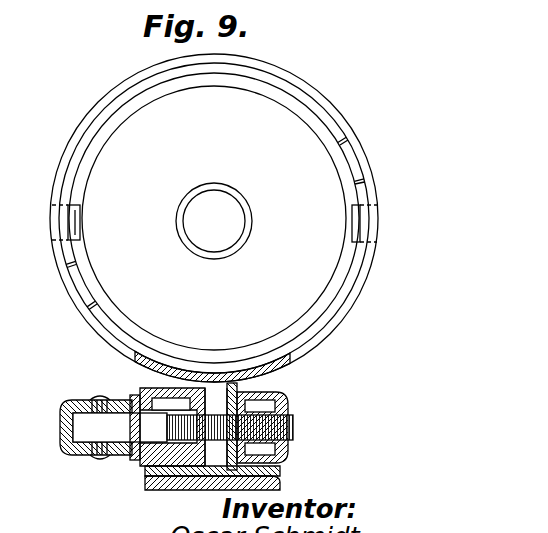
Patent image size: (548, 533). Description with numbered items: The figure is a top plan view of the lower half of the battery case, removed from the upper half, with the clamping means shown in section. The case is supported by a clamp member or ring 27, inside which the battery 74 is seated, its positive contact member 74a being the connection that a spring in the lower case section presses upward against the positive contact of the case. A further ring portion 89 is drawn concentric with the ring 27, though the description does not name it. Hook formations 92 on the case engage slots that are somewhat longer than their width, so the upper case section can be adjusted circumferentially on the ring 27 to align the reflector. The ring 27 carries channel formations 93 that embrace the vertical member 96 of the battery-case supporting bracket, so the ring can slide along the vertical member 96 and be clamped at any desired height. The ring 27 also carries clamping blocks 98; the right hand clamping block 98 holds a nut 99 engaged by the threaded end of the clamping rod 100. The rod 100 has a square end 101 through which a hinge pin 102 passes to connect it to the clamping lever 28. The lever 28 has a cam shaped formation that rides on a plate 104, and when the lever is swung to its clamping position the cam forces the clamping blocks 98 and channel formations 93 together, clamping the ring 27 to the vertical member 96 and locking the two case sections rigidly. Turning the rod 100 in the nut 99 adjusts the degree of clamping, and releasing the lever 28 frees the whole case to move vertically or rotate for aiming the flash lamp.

The clamping member or ring 27 is at (345, 118).
The flange ring 89 is at (353, 162).
The battery 74 is at (294, 125).
The positive contact member 74a is at (215, 200).
The hook formations 92 is at (80, 228).
The clamping lever 28 is at (60, 428).
The hinge pin 102 is at (90, 457).
The square end 101 is at (113, 450).
The plate 104 is at (140, 458).
The clamping blocks 98 is at (173, 392).
The nut 99 is at (287, 455).
The clamping rod 100 is at (220, 395).
The vertical member 96 is at (215, 486).
The channel formations 93 is at (282, 485).